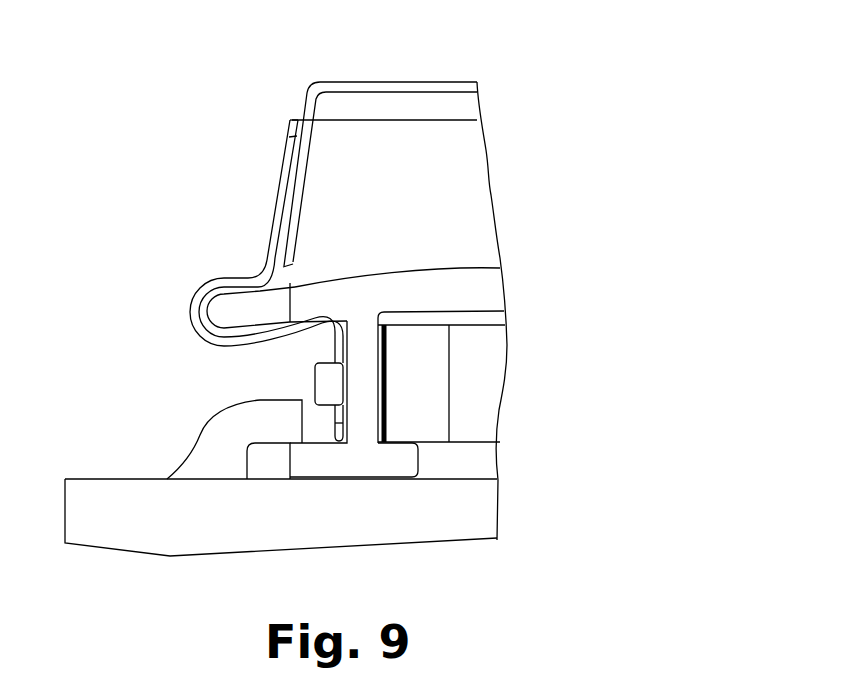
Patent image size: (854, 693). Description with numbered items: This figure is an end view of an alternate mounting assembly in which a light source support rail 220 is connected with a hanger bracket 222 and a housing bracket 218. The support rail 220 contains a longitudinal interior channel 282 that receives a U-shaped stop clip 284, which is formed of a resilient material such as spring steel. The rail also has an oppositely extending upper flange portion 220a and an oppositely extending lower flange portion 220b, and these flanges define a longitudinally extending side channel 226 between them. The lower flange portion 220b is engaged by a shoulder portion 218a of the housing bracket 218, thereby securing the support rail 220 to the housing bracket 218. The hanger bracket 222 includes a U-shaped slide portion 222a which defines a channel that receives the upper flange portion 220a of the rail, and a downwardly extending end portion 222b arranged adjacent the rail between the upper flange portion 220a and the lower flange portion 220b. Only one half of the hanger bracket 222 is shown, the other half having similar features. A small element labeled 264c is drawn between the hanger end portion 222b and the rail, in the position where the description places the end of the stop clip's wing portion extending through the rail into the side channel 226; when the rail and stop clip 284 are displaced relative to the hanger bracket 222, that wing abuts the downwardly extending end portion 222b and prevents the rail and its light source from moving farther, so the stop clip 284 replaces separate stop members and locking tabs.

The housing bracket 218 is at (113, 503).
The shoulder portion 218a is at (220, 440).
The light source support rail 220 is at (516, 278).
The upper flange portion 220a is at (250, 305).
The lower flange portion 220b is at (262, 463).
The hanger bracket 222 is at (413, 80).
The U-shaped slide portion 222a is at (200, 295).
The downwardly extending end portion 222b is at (333, 430).
The side channel 226 is at (297, 349).
The contact block 264c is at (320, 383).
The interior channel 282 is at (473, 415).
The U-shaped stop clip 284 is at (435, 370).